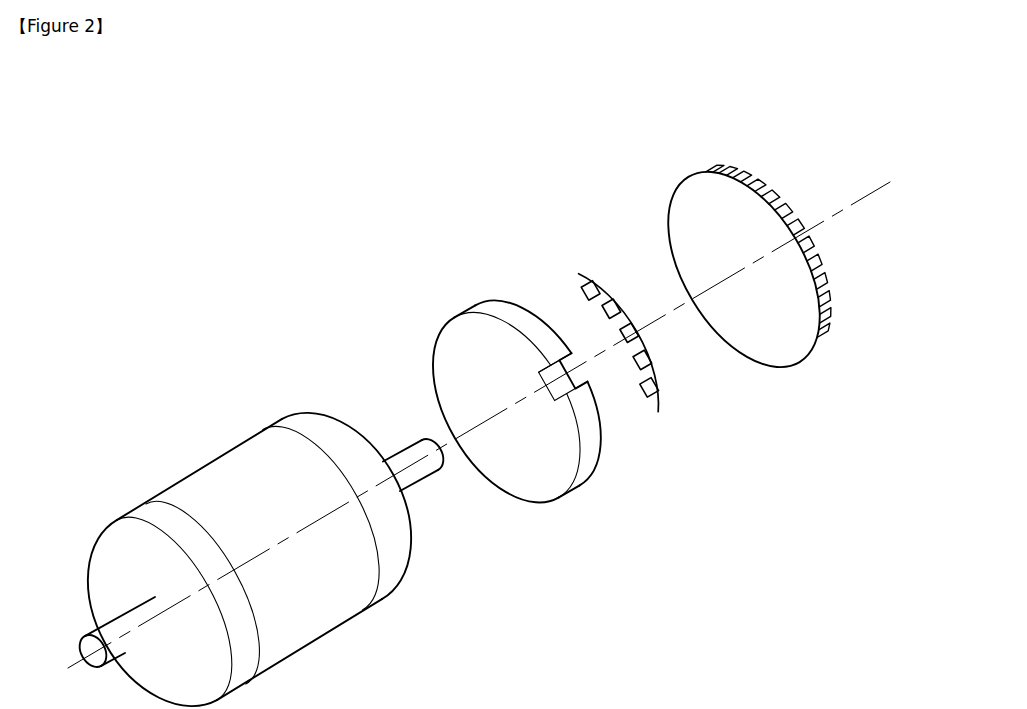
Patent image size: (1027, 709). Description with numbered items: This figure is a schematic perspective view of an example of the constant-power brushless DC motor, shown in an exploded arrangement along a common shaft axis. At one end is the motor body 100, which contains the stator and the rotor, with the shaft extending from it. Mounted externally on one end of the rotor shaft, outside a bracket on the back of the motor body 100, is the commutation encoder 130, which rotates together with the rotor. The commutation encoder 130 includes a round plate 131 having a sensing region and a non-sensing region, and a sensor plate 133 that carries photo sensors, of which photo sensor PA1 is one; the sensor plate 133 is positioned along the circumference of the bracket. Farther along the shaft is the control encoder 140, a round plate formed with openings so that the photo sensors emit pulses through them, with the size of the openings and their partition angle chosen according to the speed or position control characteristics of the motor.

The motor body 100 is at (210, 458).
The commutation encoder 130 is at (571, 359).
The round plate 131 is at (593, 457).
The sensor plate 133 is at (658, 319).
The photo sensor PA1 is at (637, 331).
The control encoder 140 is at (695, 190).